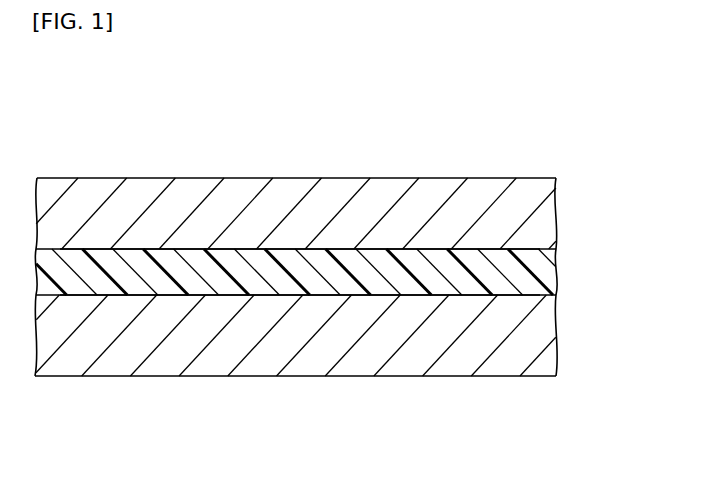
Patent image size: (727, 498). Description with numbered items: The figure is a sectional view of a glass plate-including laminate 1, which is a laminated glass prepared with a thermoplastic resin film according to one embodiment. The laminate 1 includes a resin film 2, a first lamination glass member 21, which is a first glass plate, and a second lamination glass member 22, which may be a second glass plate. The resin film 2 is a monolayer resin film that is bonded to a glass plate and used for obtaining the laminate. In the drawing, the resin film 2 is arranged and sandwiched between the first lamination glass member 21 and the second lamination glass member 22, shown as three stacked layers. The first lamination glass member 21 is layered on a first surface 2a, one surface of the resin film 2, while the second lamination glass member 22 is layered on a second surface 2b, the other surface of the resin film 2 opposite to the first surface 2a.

The glass plate-including laminate 1 is at (105, 134).
The resin film 2 is at (566, 270).
The first surface 2a is at (397, 249).
The second surface 2b is at (397, 295).
The first lamination glass member 21 is at (556, 212).
The second lamination glass member 22 is at (556, 337).